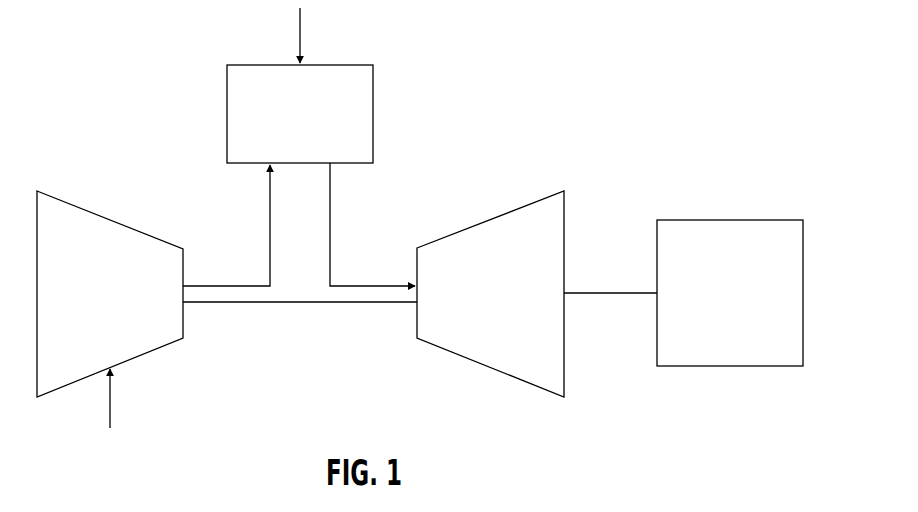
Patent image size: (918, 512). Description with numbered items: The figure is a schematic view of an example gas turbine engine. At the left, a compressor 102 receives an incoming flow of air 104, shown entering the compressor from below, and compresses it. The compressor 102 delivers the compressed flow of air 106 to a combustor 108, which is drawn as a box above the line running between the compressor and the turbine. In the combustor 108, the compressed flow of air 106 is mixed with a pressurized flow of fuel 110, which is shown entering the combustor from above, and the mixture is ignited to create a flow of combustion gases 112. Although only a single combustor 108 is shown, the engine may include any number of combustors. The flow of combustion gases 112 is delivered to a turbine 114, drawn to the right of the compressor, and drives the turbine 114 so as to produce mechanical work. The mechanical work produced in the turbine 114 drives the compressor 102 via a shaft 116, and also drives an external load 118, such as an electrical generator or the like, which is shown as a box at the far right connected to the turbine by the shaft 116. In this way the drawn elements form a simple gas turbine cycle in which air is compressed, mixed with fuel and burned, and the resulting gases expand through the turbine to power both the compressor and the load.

The compressor 102 is at (110, 217).
The incoming flow of air 104 is at (112, 397).
The compressed flow of air 106 is at (230, 284).
The combustor 108 is at (324, 126).
The pressurized flow of fuel 110 is at (302, 35).
The flow of combustion gases 112 is at (360, 284).
The turbine 114 is at (489, 218).
The shaft 116 is at (600, 290).
The external load 118 is at (730, 218).